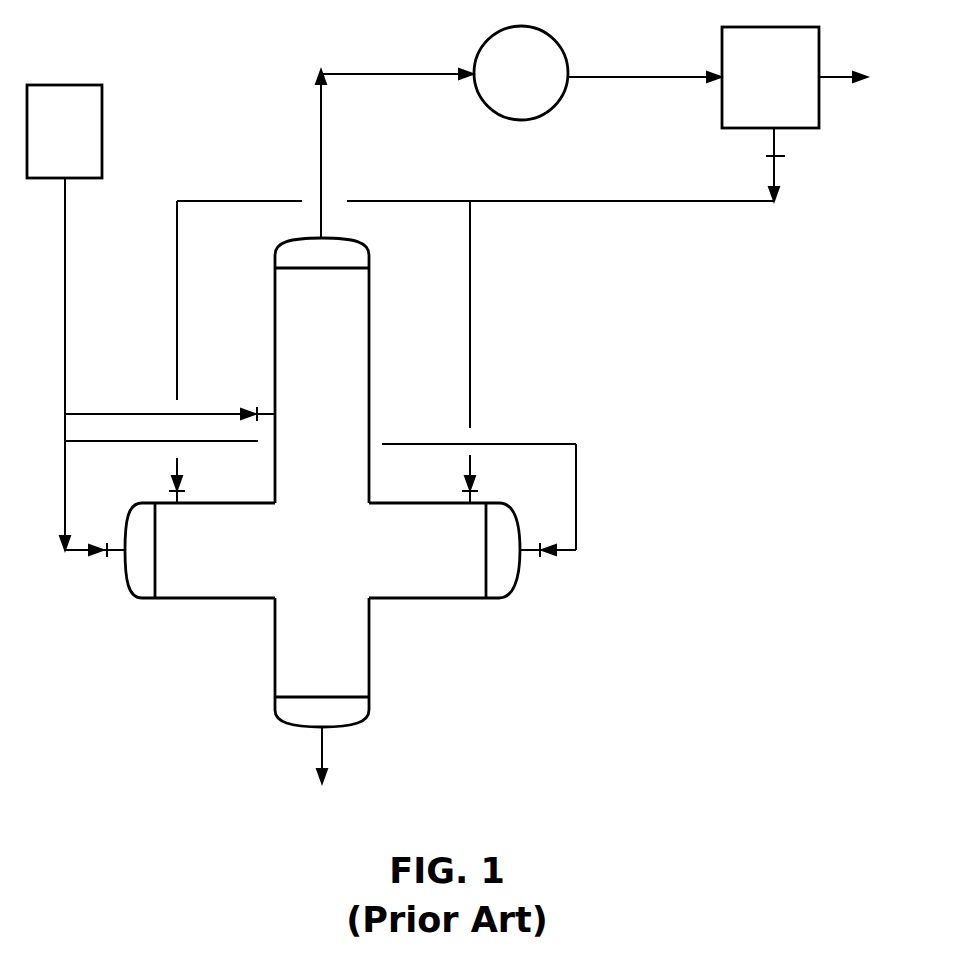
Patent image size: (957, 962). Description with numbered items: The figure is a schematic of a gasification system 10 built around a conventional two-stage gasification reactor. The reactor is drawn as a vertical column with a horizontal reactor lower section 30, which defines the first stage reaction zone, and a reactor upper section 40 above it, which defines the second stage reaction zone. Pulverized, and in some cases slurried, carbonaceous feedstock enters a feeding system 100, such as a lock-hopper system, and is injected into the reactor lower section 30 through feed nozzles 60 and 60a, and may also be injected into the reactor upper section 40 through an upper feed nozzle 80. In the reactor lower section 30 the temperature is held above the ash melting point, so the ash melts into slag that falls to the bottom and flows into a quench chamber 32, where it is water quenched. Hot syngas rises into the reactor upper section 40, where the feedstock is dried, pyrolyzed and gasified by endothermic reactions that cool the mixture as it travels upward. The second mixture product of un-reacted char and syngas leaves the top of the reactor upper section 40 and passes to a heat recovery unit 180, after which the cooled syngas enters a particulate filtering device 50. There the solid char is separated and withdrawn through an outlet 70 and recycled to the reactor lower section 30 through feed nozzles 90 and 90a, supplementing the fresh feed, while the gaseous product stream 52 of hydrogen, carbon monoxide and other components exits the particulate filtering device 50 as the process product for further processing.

The gasification system 10 is at (359, 510).
The reactor lower section 30 is at (322, 550).
The quench chamber 32 is at (322, 690).
The reactor upper section 40 is at (322, 370).
The particulate filtering device 50 is at (693, 77).
The gaseous product stream 52 is at (830, 56).
The feed nozzle 60 is at (93, 560).
The feed nozzle 60a is at (479, 512).
The outlet 70 is at (805, 168).
The upper feed nozzle 80 is at (170, 414).
The feed nozzle 90 is at (162, 352).
The feed nozzle 90a is at (451, 352).
The feeding system 100 is at (64, 310).
The heat recovery unit 180 is at (442, 132).